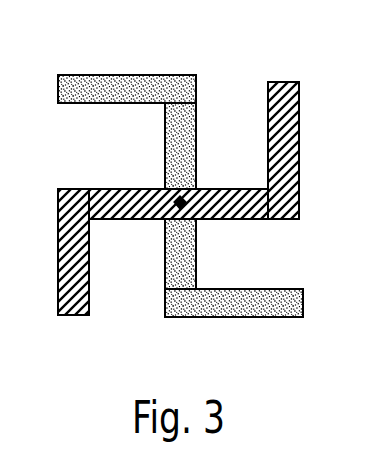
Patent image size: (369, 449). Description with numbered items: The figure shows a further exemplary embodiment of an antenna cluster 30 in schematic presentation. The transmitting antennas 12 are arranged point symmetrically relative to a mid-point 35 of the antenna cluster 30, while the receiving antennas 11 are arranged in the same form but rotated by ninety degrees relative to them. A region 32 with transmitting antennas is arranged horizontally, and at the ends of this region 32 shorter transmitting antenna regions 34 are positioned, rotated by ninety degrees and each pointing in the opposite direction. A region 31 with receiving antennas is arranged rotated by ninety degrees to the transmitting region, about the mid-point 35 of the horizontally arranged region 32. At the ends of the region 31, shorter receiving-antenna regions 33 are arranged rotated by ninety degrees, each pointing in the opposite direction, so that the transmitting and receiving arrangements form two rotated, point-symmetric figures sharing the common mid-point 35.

The antenna cluster 30 is at (294, 31).
The receiving antennas 11 is at (175, 173).
The transmitting antennas 12 is at (237, 193).
The region with receiving antennas 31 is at (165, 133).
The region with transmitting antennas 32 is at (210, 187).
The shorter receiving-antenna regions 33 is at (87, 103).
The shorter transmitting antenna regions 34 is at (268, 117).
The mid-point 35 is at (184, 208).